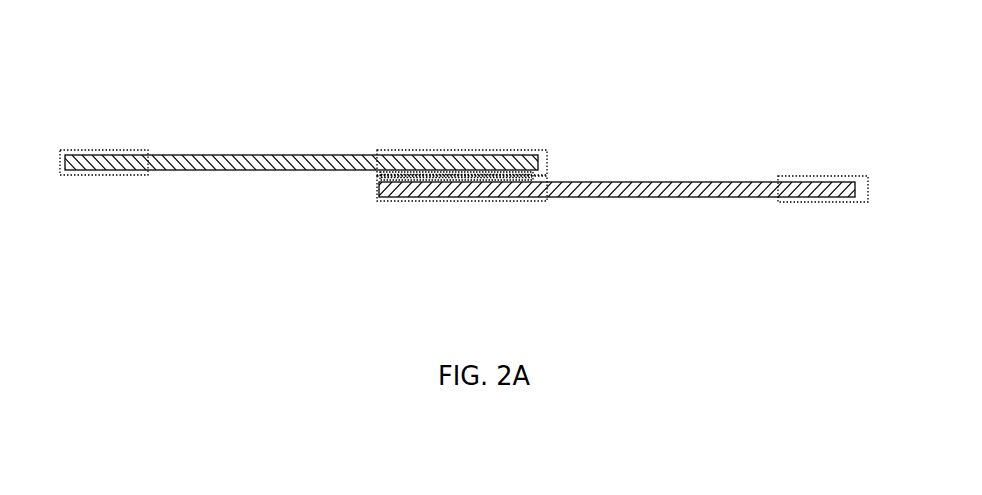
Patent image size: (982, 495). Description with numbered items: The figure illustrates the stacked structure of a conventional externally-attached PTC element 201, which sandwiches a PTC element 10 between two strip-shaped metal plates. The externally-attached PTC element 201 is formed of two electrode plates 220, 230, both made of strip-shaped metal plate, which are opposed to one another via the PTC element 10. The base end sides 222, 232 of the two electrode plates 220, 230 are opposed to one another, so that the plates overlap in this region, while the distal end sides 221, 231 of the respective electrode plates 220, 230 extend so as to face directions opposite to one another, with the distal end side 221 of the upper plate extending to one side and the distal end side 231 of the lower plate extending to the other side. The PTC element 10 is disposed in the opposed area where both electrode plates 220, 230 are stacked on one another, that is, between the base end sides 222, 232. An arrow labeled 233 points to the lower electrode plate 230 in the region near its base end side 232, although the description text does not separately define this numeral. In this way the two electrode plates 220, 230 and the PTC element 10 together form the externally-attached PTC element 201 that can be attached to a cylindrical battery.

The externally-attached PTC element 201 is at (342, 97).
The electrode plate 220 is at (187, 155).
The distal end side 221 is at (87, 176).
The base end side 222 is at (552, 150).
The PTC element 10 is at (383, 175).
The electrode plate 230 is at (641, 197).
The distal end side 231 is at (807, 176).
The base end side 232 is at (411, 201).
The surface of second substrate 233 is at (564, 199).